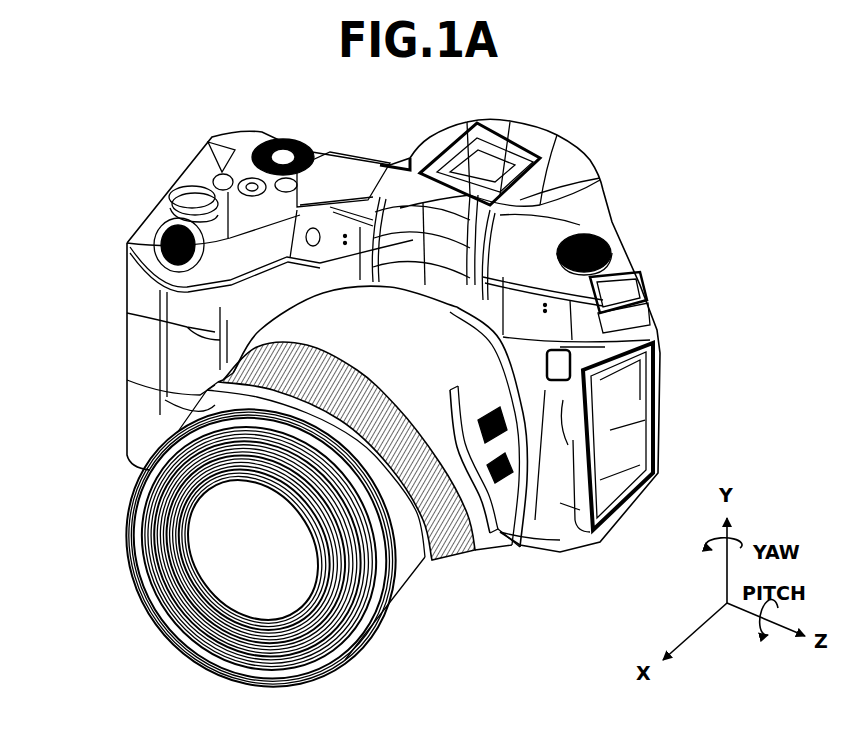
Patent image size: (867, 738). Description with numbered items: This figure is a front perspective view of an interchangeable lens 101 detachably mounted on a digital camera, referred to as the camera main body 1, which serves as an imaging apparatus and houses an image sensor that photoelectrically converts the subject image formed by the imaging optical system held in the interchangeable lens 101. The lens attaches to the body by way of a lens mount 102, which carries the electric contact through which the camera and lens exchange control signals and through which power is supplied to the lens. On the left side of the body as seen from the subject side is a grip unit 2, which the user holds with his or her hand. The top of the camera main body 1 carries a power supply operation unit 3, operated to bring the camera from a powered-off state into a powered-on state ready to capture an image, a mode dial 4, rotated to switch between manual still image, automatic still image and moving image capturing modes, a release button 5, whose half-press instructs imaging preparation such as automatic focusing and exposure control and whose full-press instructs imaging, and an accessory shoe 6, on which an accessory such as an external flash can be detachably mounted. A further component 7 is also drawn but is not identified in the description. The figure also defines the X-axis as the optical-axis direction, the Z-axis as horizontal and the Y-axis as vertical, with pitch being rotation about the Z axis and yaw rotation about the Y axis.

The camera main body 1 is at (600, 125).
The grip unit 2 is at (147, 366).
The power supply operation unit 3 is at (608, 244).
The mode dial 4 is at (288, 150).
The release button 5 is at (170, 236).
The accessory shoe 6 is at (452, 153).
The display unit 7 is at (660, 346).
The interchangeable lens 101 is at (158, 637).
The lens mount 102 is at (540, 500).